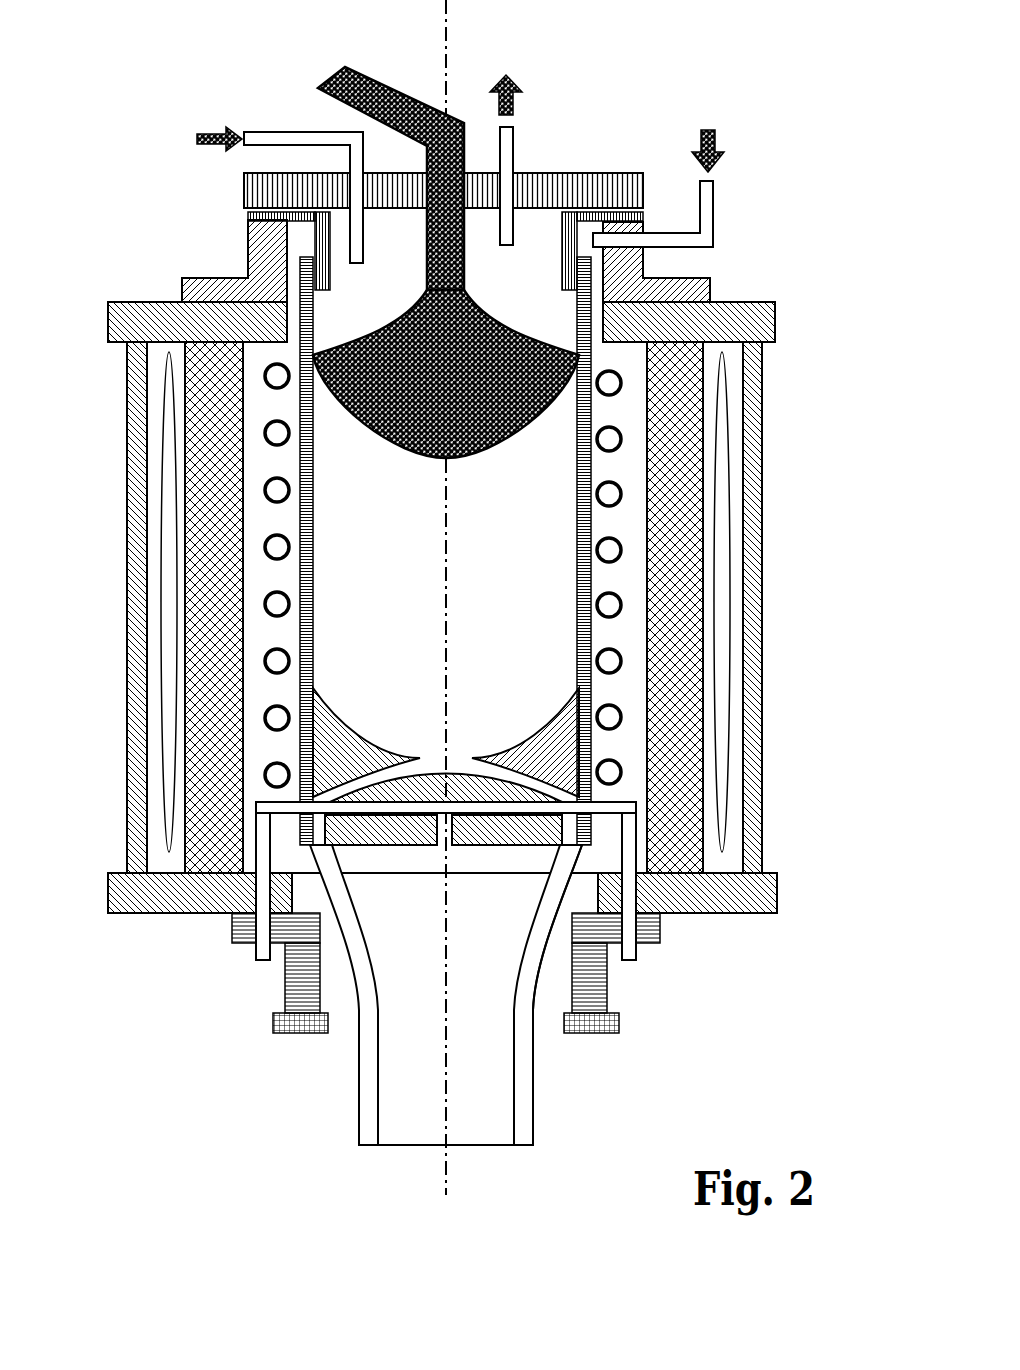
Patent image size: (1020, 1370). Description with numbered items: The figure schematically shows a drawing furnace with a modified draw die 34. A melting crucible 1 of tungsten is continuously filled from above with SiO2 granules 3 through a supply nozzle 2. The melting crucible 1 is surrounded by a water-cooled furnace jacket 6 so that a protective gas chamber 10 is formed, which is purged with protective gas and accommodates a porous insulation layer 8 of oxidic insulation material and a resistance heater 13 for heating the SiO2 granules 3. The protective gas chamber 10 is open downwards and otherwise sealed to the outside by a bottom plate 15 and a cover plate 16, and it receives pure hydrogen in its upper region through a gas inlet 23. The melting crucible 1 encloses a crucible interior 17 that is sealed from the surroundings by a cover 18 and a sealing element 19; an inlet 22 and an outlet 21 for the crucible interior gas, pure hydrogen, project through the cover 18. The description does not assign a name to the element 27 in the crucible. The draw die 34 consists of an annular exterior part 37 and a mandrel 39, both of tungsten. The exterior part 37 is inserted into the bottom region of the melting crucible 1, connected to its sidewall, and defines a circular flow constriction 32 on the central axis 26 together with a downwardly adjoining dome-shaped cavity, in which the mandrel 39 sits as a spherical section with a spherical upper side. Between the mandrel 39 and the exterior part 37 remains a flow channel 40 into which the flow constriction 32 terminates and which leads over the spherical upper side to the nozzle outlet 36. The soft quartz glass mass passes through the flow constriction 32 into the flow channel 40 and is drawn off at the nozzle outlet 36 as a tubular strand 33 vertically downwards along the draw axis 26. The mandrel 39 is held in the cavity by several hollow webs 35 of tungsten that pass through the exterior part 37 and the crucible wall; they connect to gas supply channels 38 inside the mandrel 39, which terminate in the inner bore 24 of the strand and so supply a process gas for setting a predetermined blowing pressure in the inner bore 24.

The melting crucible 1 is at (300, 615).
The supply nozzle 2 is at (377, 78).
The SiO2 granules 3 is at (515, 363).
The furnace jacket 6 is at (757, 522).
The insulation layer 8 is at (690, 803).
The protective gas chamber 10 is at (638, 398).
The resistance heater 13 is at (276, 548).
The bottom plate 15 is at (683, 913).
The cover plate 16 is at (162, 323).
The crucible interior 17 is at (413, 251).
The cover 18 is at (597, 180).
The sealing element 19 is at (257, 213).
The outlet 21 is at (507, 150).
The inlet 22 is at (275, 142).
The gas inlet 23 is at (712, 217).
The inner bore 24 is at (456, 925).
The central axis 26 is at (443, 1162).
The melt chamber 27 is at (348, 507).
The flow constriction 32 is at (455, 757).
The tubular strand 33 is at (522, 1082).
The draw die 34 is at (425, 857).
The hollow webs 35 is at (290, 806).
The nozzle outlet 36 is at (485, 845).
The exterior part of the draw die 37 is at (547, 752).
The gas supply channels 38 is at (420, 850).
The mandrel 39 is at (573, 850).
The flow channel 40 is at (277, 777).